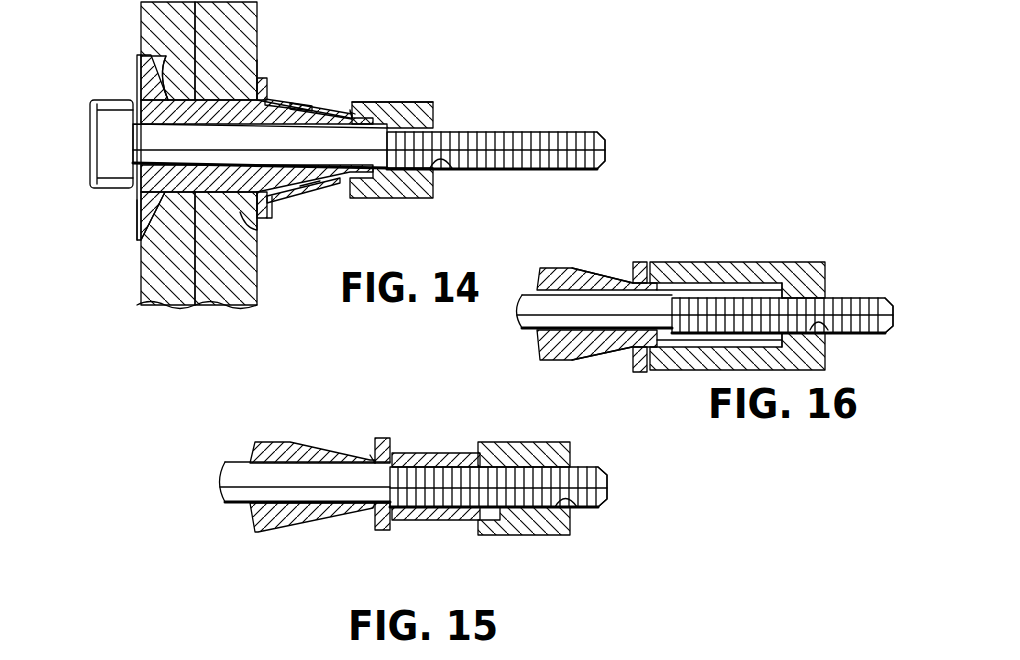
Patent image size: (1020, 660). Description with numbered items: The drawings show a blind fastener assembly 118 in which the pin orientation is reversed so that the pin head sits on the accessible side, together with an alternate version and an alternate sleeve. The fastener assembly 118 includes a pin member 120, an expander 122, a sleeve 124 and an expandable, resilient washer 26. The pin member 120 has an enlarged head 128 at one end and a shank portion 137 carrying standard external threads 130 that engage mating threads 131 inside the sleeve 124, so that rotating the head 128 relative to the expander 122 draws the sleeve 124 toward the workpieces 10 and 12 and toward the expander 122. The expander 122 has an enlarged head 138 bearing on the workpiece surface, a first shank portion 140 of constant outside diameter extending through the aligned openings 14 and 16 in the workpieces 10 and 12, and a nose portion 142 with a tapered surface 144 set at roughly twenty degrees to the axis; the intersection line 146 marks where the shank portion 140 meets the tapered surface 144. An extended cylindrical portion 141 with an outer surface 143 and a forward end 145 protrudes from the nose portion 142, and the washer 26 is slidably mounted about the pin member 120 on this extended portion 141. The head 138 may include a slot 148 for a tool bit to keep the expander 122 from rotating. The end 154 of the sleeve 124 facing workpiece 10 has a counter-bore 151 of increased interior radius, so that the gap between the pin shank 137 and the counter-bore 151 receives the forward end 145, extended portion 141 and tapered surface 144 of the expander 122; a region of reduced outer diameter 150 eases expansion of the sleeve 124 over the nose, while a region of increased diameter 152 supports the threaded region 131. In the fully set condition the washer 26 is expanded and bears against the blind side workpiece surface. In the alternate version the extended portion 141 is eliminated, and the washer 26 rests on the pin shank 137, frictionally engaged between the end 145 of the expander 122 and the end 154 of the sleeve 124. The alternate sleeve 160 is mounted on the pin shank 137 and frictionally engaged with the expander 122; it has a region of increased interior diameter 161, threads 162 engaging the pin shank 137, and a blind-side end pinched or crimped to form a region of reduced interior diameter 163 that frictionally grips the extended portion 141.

In FIG. 14, the workpiece 10 is at (245, 40).
In FIG. 14, the workpiece 12 is at (158, 32).
In FIG. 14, the opening 14 is at (258, 58).
In FIG. 14, the opening 16 is at (167, 63).
In FIG. 14, the expandable resilient washer 26 is at (268, 85).
In FIG. 16, the expandable resilient washer 26 is at (638, 372).
In FIG. 15, the expandable resilient washer 26 is at (383, 438).
In FIG. 14, the fastener assembly 118 is at (353, 64).
In FIG. 14, the pin member 120 is at (384, 145).
In FIG. 16, the pin member 120 is at (705, 293).
In FIG. 15, the pin member 120 is at (434, 482).
In FIG. 14, the expander 122 is at (135, 92).
In FIG. 16, the expander 122 is at (559, 268).
In FIG. 15, the expander 122 is at (310, 442).
In FIG. 14, the sleeve 124 is at (435, 120).
In FIG. 14, the enlarged head 128 is at (100, 132).
In FIG. 14, the external threads 130 is at (518, 133).
In FIG. 15, the external threads 130 is at (590, 480).
In FIG. 14, the mating threads 131 is at (452, 168).
In FIG. 15, the mating threads 131 is at (577, 507).
In FIG. 14, the shank portion 137 is at (588, 170).
In FIG. 16, the shank portion 137 is at (832, 305).
In FIG. 15, the shank portion 137 is at (603, 500).
In FIG. 14, the enlarged head 138 is at (137, 78).
In FIG. 14, the first shank portion 140 is at (240, 215).
In FIG. 14, the extended cylindrical portion 141 is at (350, 108).
In FIG. 16, the extended cylindrical portion 141 is at (636, 262).
In FIG. 14, the nose portion 142 is at (322, 200).
In FIG. 16, the nose portion 142 is at (590, 276).
In FIG. 14, the outer surface 143 is at (345, 196).
In FIG. 14, the tapered surface 144 is at (330, 105).
In FIG. 16, the tapered surface 144 is at (590, 360).
In FIG. 15, the forward end 145 is at (372, 462).
In FIG. 14, the intersection line 146 is at (300, 98).
In FIG. 14, the slot 148 is at (137, 212).
In FIG. 15, the region of reduced outer diameter 150 is at (418, 453).
In FIG. 15, the counter-bore 151 is at (456, 521).
In FIG. 14, the region of increased diameter 152 is at (405, 108).
In FIG. 15, the region of increased diameter 152 is at (492, 442).
In FIG. 14, the end of sleeve 154 is at (270, 208).
In FIG. 15, the end of sleeve 154 is at (390, 532).
In FIG. 16, the sleeve 160 is at (760, 299).
In FIG. 16, the region of increased interior diameter 161 is at (700, 365).
In FIG. 16, the threads 162 is at (828, 314).
In FIG. 16, the region of reduced interior diameter 163 is at (656, 268).